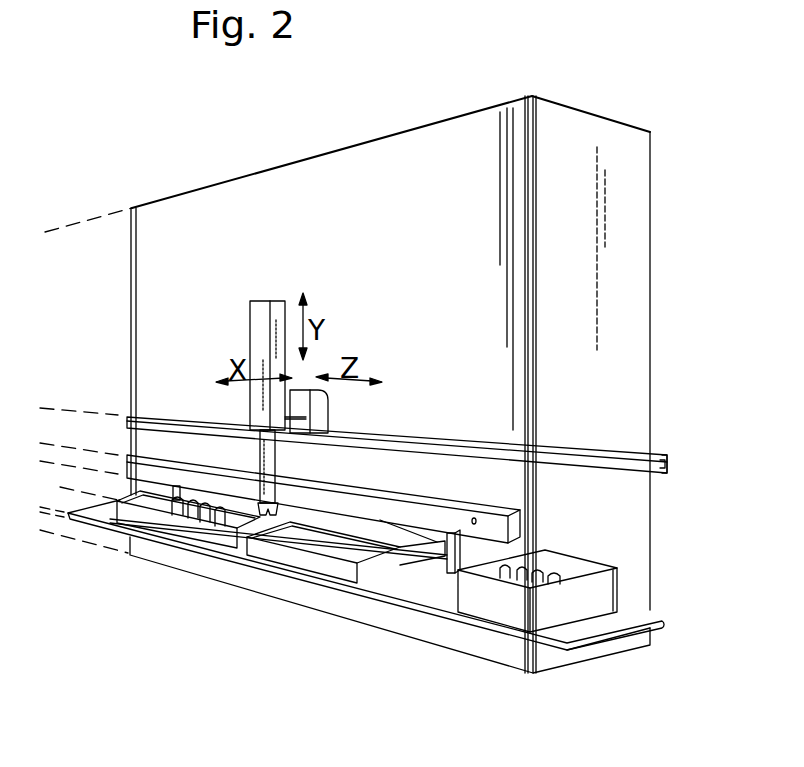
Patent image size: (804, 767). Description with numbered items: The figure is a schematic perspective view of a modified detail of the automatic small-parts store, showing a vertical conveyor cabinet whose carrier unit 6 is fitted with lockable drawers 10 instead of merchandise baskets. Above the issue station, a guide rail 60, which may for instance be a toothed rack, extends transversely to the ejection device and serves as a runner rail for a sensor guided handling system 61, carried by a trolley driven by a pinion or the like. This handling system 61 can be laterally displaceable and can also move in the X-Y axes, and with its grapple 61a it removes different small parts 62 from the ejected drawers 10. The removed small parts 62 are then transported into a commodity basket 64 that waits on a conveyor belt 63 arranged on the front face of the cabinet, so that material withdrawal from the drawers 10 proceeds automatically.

The carrier unit 6 is at (460, 553).
The drawers 10 is at (279, 551).
The guide rail 60 is at (668, 455).
The sensor guided handling system 61 is at (258, 327).
The grapple 61a is at (277, 506).
The small parts 62 is at (130, 497).
The conveyor belt 63 is at (403, 604).
The commodity basket 64 is at (513, 603).